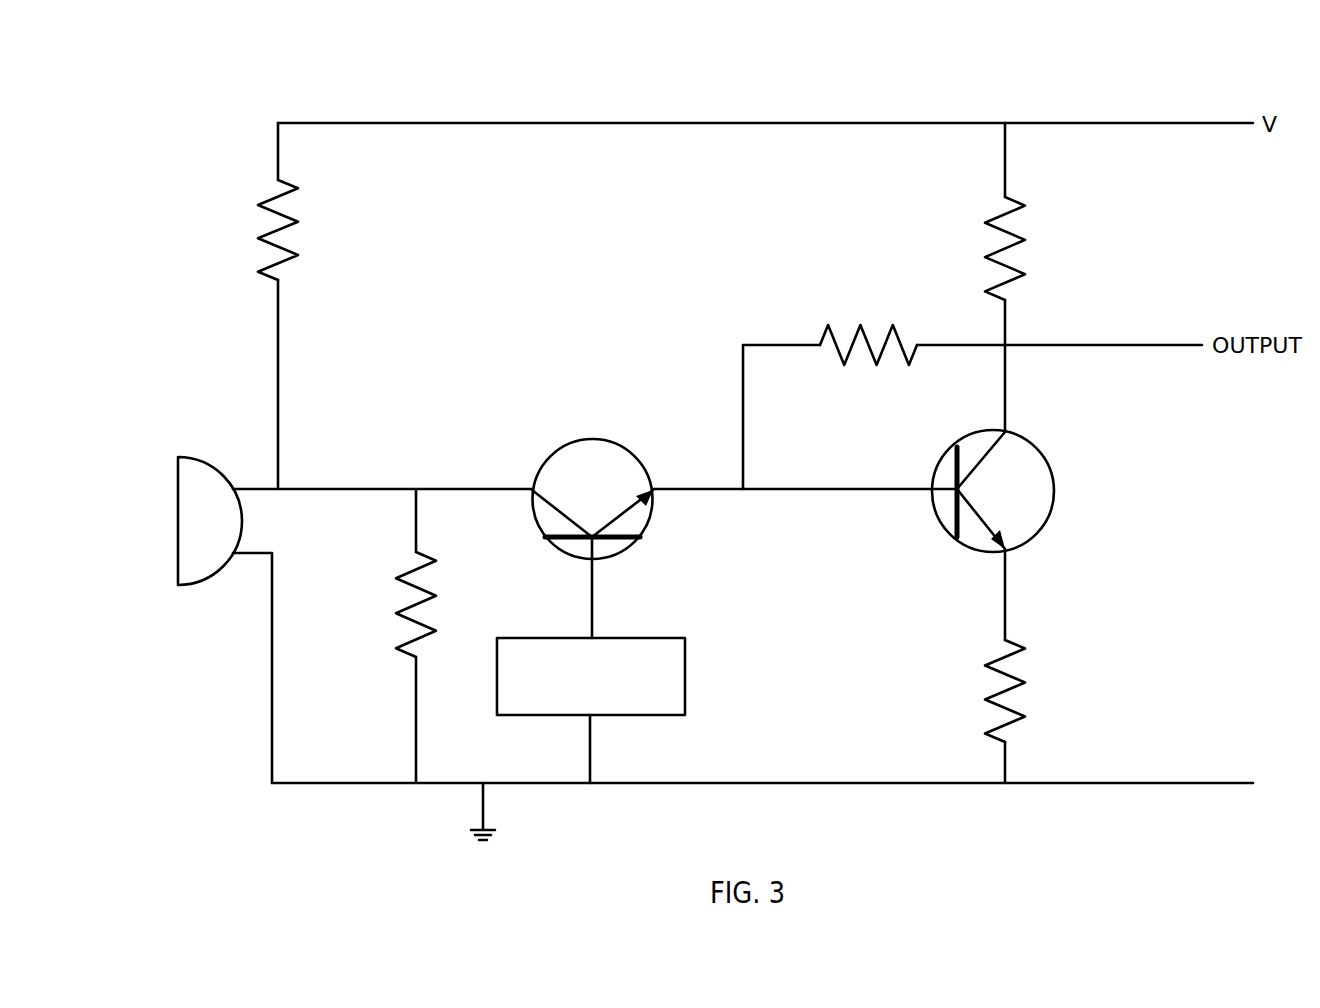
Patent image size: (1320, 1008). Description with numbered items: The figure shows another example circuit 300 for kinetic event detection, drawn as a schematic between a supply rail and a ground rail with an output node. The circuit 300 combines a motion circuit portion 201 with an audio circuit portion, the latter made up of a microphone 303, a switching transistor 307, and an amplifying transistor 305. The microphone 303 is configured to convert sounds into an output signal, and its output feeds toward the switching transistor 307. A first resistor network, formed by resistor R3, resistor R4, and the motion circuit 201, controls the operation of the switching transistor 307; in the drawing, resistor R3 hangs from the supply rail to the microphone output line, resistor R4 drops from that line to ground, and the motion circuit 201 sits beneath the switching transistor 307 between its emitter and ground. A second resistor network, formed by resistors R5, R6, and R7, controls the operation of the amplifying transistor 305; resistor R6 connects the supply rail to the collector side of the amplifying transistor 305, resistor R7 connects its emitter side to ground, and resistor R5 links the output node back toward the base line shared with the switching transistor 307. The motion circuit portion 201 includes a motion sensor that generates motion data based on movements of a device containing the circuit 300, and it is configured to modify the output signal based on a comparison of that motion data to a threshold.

The circuit 300 is at (203, 82).
The resistor R3 is at (270, 196).
The microphone 303 is at (198, 455).
The resistor R4 is at (410, 565).
The switching transistor 307 is at (565, 440).
The motion circuit portion 201 is at (538, 638).
The resistor R5 is at (825, 325).
The resistor R6 is at (995, 215).
The amplifying transistor 305 is at (937, 453).
The resistor R7 is at (988, 656).